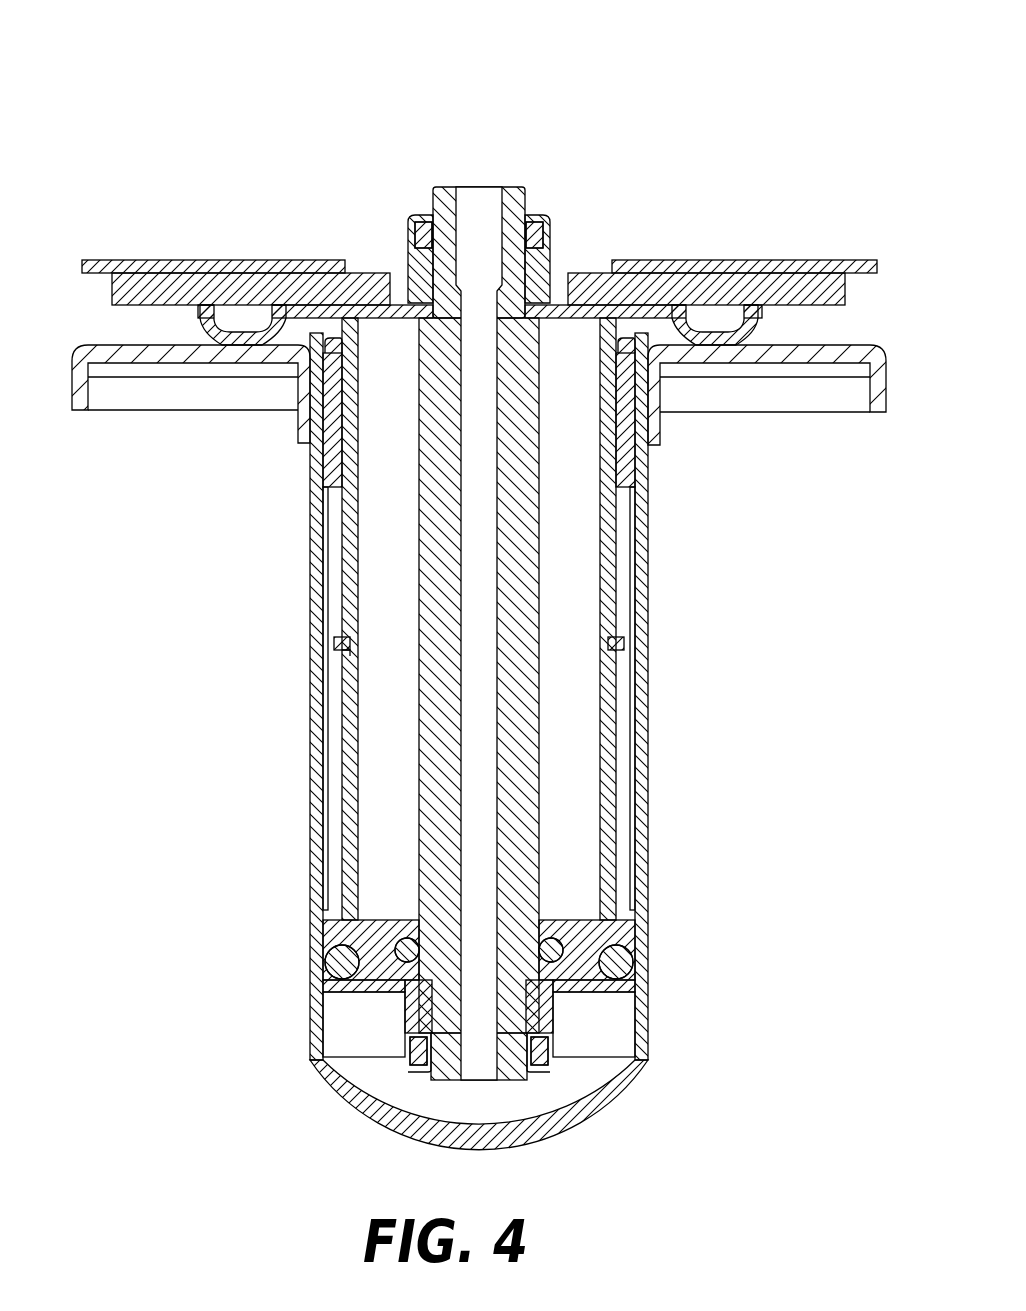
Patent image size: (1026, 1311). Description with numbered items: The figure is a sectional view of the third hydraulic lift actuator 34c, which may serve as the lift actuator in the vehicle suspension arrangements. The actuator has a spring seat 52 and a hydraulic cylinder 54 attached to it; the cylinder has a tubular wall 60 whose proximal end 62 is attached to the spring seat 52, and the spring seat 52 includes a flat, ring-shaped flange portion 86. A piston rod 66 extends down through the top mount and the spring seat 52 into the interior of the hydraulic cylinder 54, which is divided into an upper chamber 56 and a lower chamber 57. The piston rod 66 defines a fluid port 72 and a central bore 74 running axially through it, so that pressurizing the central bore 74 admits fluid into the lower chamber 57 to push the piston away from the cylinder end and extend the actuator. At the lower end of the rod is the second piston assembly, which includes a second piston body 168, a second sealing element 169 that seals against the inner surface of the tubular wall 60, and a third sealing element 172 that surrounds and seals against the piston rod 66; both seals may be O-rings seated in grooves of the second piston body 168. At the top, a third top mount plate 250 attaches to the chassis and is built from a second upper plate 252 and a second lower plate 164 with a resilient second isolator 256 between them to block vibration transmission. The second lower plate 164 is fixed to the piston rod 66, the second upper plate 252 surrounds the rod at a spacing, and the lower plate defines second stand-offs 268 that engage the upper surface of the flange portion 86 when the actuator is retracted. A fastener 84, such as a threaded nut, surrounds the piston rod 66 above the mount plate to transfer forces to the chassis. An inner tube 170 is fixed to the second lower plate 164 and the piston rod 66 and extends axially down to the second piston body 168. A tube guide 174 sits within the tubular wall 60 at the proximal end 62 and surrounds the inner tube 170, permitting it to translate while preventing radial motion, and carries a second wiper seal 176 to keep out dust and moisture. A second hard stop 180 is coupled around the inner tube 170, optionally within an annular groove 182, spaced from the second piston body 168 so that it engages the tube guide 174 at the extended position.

The third hydraulic lift actuator 34c is at (474, 578).
The spring seat 52 is at (82, 348).
The hydraulic cylinder 54 is at (308, 583).
The upper chamber 56 is at (336, 862).
The lower chamber 57 is at (343, 1028).
The tubular wall 60 is at (324, 800).
The proximal end 62 is at (322, 396).
The piston rod 66 is at (530, 520).
The fluid port 72 is at (445, 198).
The central bore 74 is at (495, 218).
The fastener 84 is at (420, 272).
The flange portion 86 is at (856, 357).
The second lower plate 164 is at (338, 312).
The second piston body 168 is at (626, 922).
The second sealing element 169 is at (626, 970).
The inner tube 170 is at (618, 590).
The third sealing element 172 is at (552, 944).
The tube guide 174 is at (320, 460).
The second wiper seal 176 is at (614, 334).
The second hard stop 180 is at (340, 641).
The annular groove 182 is at (352, 653).
The third top mount plate 250 is at (96, 254).
The second upper plate 252 is at (260, 266).
The second isolator 256 is at (700, 272).
The second stand-off 268 is at (752, 332).